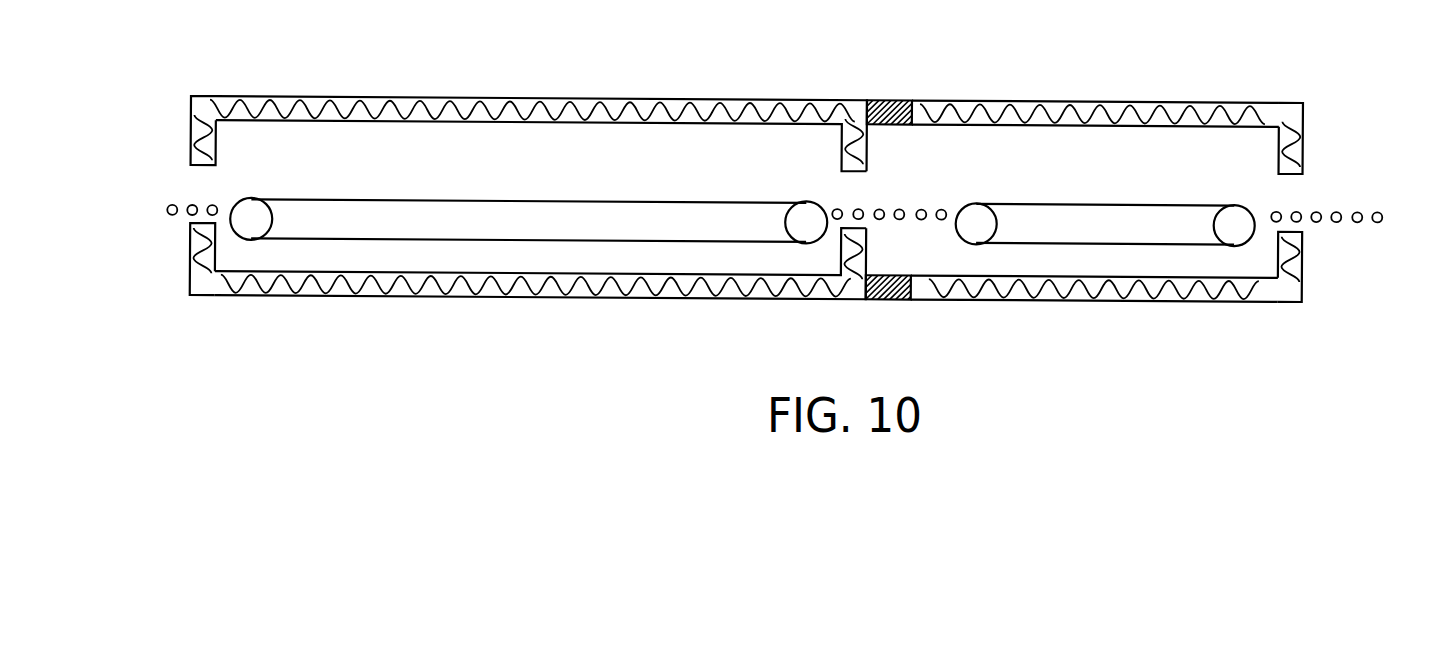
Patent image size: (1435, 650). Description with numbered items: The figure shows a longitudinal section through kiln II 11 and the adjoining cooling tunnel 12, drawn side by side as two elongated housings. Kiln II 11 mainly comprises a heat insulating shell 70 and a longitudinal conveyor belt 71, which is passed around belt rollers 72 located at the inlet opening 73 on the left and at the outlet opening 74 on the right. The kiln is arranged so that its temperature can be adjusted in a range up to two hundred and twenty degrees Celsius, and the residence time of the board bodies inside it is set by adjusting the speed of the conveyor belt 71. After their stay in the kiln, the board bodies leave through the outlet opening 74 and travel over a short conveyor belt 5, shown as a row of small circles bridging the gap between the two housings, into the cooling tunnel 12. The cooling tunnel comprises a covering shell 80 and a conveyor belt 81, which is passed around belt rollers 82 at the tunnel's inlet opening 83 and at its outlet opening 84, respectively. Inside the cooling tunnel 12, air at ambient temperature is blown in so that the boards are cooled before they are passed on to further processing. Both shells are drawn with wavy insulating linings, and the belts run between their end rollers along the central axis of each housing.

The conveyor belt 5 is at (166, 208).
The kiln II 11 is at (728, 68).
The cooling tunnel 12 is at (990, 67).
The heat insulating shell 70 is at (406, 105).
The longitudinal conveyor belt 71 is at (478, 199).
The belt rollers 72 is at (811, 240).
The inlet opening 73 is at (197, 183).
The outlet opening 74 is at (830, 188).
The covering shell 80 is at (1110, 115).
The conveyor belt 81 is at (1143, 203).
The belt rollers 82 is at (977, 244).
The inlet opening 83 is at (872, 190).
The outlet opening 84 is at (1297, 193).